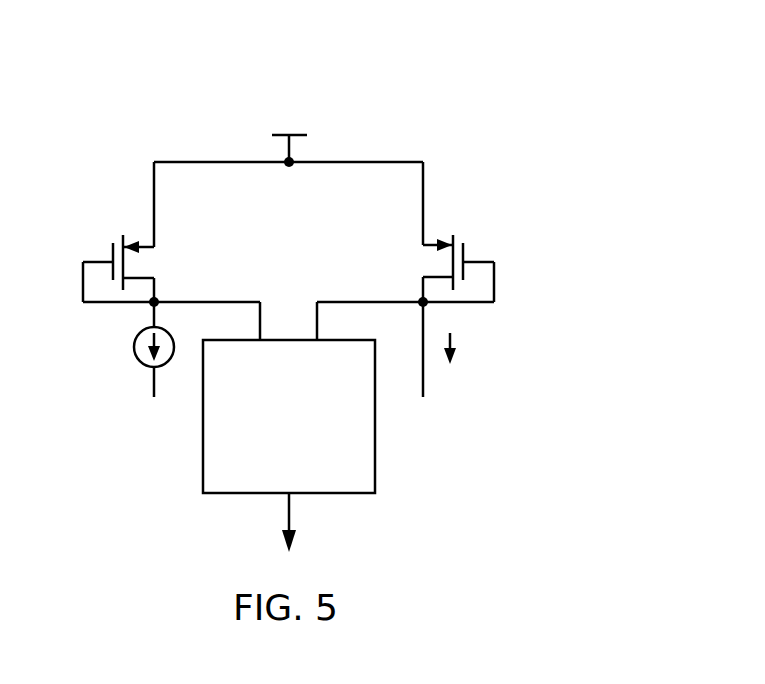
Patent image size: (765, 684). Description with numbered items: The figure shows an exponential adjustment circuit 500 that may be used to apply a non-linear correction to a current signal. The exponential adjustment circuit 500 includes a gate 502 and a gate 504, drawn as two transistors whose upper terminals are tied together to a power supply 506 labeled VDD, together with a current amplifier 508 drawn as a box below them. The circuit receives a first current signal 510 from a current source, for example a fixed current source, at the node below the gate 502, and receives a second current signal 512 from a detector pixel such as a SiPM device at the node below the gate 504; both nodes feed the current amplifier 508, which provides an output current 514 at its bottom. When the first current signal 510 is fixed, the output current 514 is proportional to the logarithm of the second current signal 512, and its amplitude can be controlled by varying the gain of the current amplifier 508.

The exponential adjustment circuit 500 is at (480, 62).
The gate 502 is at (125, 263).
The gate 504 is at (465, 249).
The power supply 506 is at (290, 150).
The current amplifier 508 is at (375, 425).
The first current signal 510 is at (152, 313).
The second current signal 512 is at (425, 322).
The output current 514 is at (292, 519).